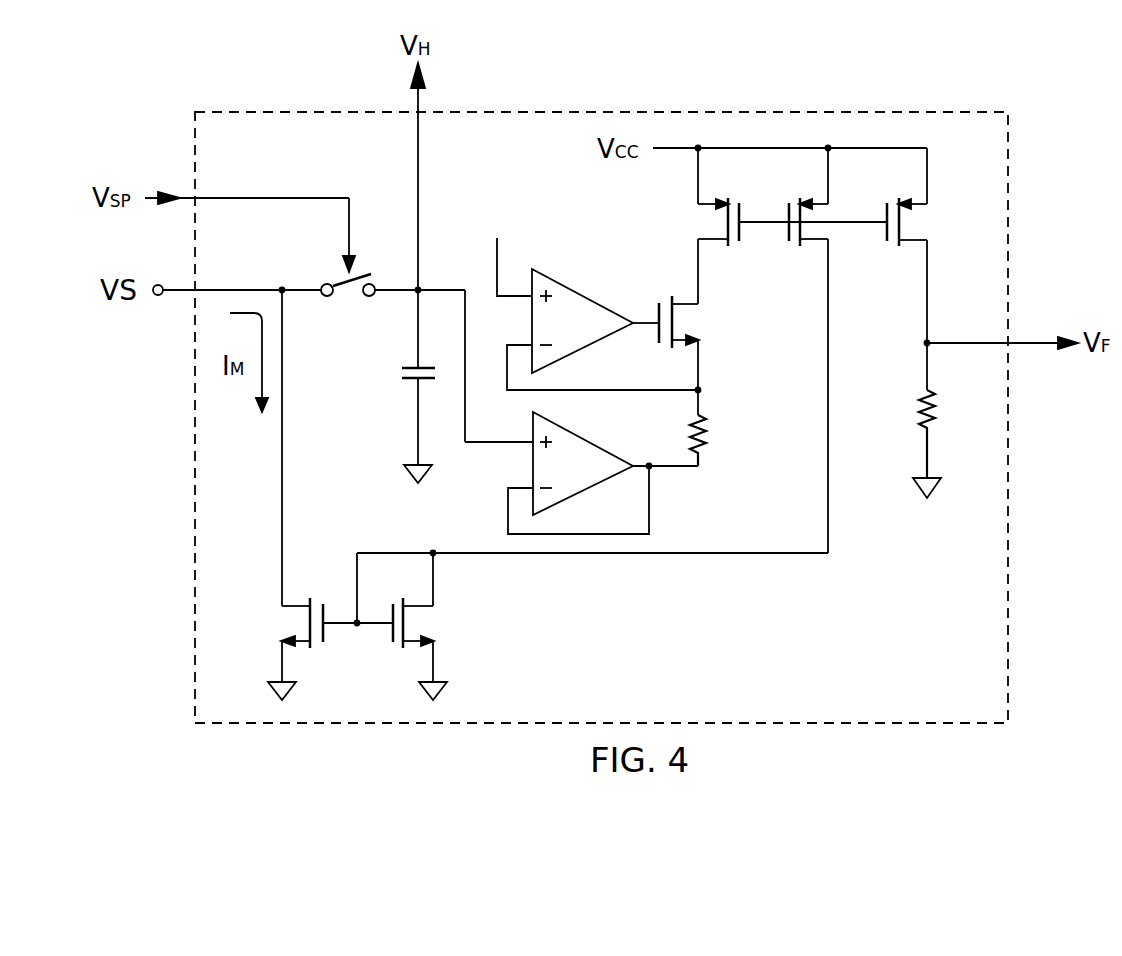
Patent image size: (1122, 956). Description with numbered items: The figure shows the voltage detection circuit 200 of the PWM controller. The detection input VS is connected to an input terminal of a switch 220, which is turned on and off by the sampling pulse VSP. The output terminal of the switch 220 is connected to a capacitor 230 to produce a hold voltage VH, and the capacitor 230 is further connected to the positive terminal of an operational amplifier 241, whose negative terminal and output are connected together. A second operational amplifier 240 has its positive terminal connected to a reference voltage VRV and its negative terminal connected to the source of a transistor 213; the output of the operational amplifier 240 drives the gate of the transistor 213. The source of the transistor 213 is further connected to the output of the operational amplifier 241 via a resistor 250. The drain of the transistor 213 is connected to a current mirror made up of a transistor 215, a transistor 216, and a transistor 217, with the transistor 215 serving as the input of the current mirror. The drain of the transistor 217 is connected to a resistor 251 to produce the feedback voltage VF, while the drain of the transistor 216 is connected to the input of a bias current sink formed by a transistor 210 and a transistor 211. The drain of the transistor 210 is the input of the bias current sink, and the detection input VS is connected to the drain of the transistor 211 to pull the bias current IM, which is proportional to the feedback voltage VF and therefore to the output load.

The voltage detection circuit 200 is at (1010, 150).
The transistor 210 is at (437, 627).
The transistor 211 is at (278, 624).
The transistor 213 is at (700, 325).
The transistor 215 is at (700, 230).
The transistor 216 is at (835, 230).
The transistor 217 is at (925, 218).
The switch 220 is at (344, 300).
The capacitor 230 is at (402, 385).
The operational amplifier 240 is at (571, 278).
The operational amplifier 241 is at (628, 426).
The resistor 250 is at (713, 437).
The resistor 251 is at (912, 410).